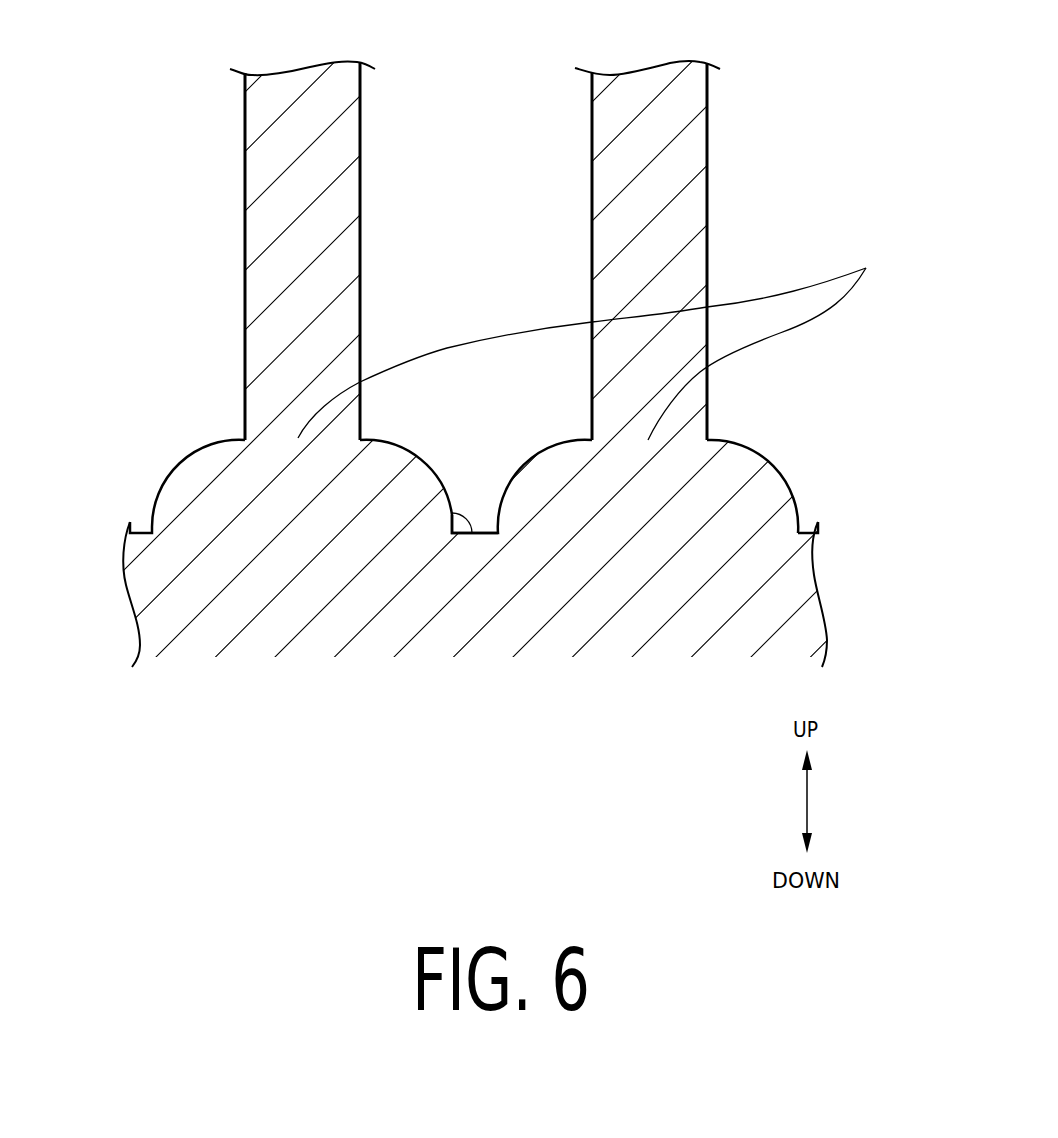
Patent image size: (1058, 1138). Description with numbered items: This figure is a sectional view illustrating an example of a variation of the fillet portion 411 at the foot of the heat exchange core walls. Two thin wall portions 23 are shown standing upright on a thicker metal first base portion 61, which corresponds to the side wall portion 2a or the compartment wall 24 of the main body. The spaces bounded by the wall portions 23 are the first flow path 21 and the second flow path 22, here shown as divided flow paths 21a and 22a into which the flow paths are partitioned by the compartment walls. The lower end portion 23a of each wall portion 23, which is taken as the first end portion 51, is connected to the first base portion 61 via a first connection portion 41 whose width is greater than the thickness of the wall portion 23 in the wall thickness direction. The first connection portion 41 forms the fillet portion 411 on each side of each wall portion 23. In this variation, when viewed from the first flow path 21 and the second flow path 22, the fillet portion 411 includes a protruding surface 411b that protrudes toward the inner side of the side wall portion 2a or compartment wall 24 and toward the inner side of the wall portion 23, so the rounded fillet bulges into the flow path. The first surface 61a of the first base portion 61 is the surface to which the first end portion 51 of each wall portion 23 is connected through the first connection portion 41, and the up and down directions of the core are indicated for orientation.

The first flow path 21 is at (529, 370).
The divided flow path 21a is at (515, 190).
The second flow path 22 is at (529, 370).
The divided flow path 22a is at (790, 118).
The wall portion 23 is at (298, 318).
The end portion 23a is at (624, 338).
The first end portion 51 is at (582, 354).
The first base portion 61 is at (529, 402).
The side wall portion 2a is at (529, 370).
The compartment wall 24 is at (593, 627).
The fillet portion 411 is at (152, 480).
The protruding surface 411b is at (198, 448).
The first surface 61a is at (448, 518).
The first connection portion 41 is at (650, 488).